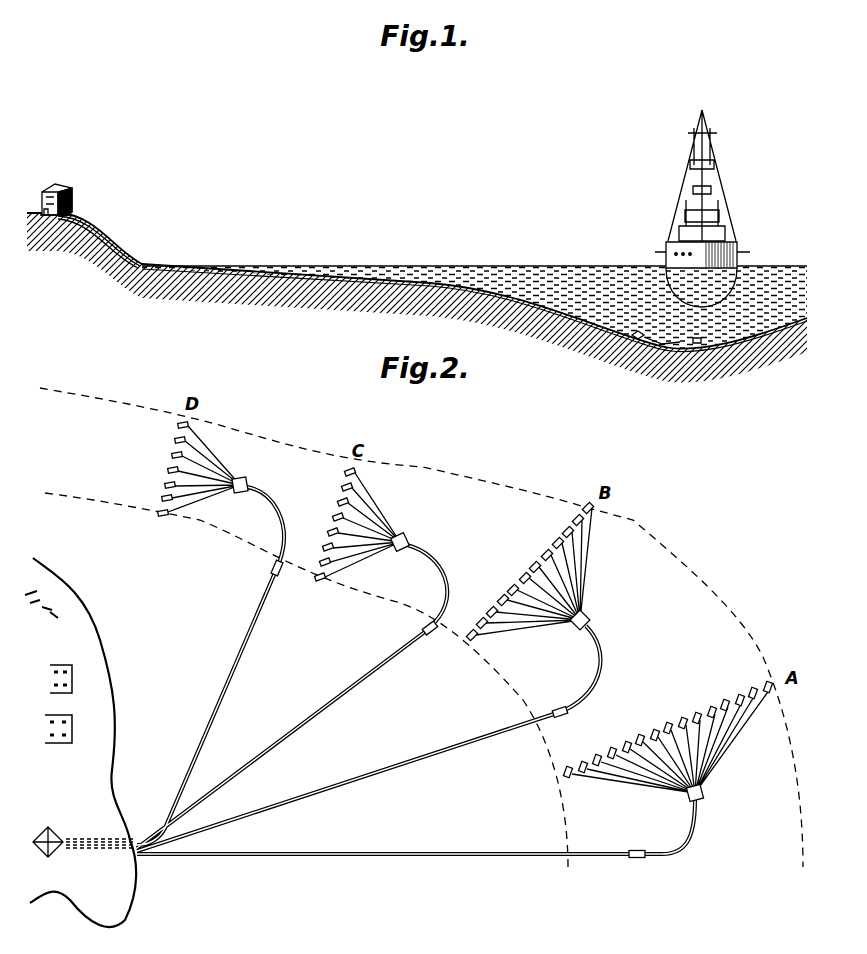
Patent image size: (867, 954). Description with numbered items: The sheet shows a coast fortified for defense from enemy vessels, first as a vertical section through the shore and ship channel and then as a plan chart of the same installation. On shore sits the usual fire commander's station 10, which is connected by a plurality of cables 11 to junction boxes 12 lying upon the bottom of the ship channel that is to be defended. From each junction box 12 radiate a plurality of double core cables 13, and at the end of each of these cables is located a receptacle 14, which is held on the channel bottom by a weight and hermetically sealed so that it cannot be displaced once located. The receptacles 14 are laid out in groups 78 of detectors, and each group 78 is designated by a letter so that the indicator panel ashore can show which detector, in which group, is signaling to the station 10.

In FIG. 1, the fire commander's station 10 is at (55, 189).
In FIG. 2, the fire commander's station 10 is at (60, 835).
In FIG. 1, the cable 11 is at (160, 263).
In FIG. 2, the cable 11 is at (284, 535).
In FIG. 1, the junction box 12 is at (637, 341).
In FIG. 2, the junction box 12 is at (250, 483).
In FIG. 1, the double core cable 13 is at (663, 345).
In FIG. 2, the double core cable 13 is at (218, 463).
In FIG. 1, the receptacle 14 is at (698, 342).
In FIG. 2, the receptacle 14 is at (189, 425).
In FIG. 2, the group of detectors 78 is at (461, 592).